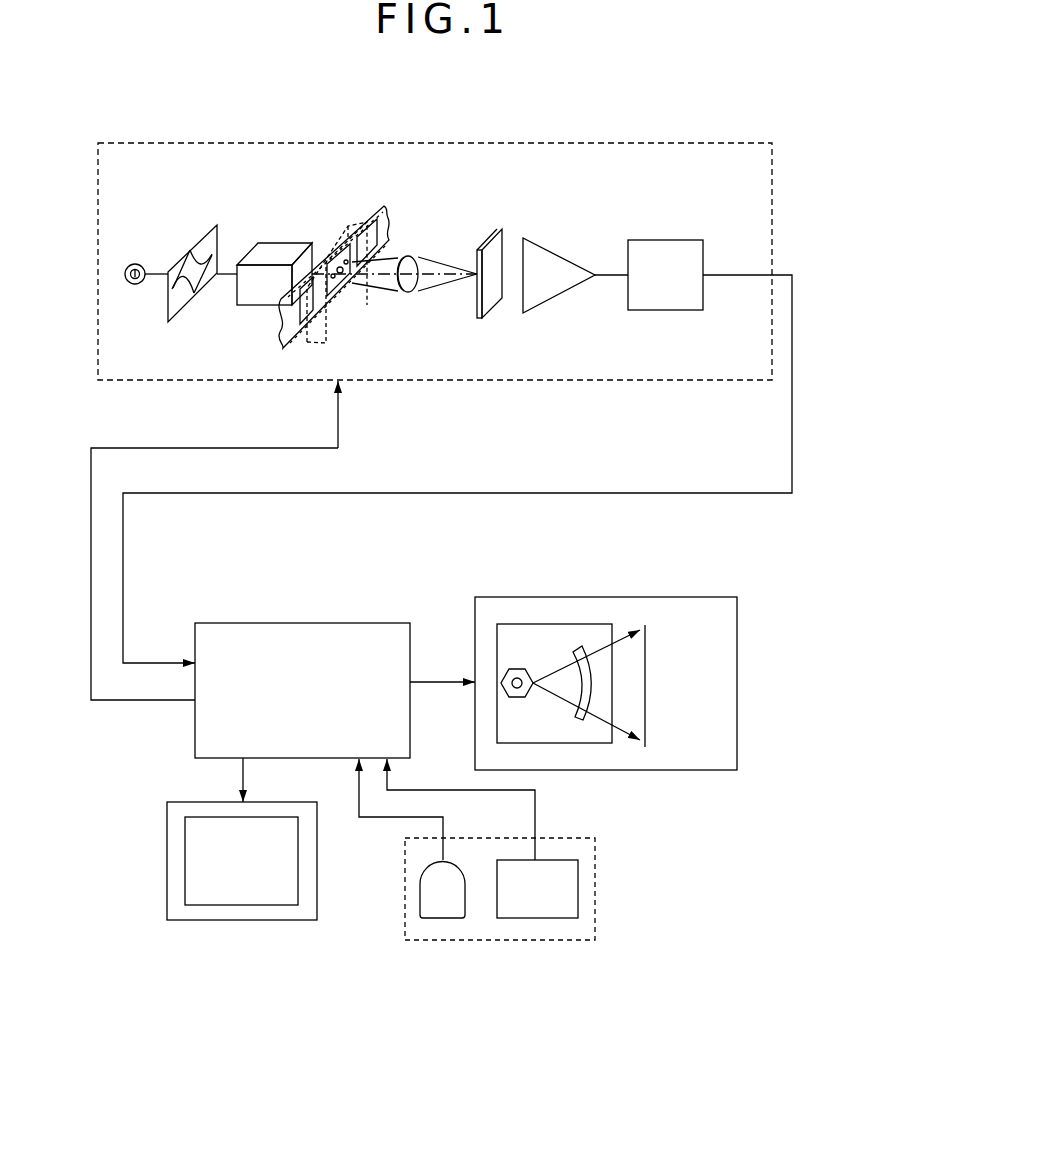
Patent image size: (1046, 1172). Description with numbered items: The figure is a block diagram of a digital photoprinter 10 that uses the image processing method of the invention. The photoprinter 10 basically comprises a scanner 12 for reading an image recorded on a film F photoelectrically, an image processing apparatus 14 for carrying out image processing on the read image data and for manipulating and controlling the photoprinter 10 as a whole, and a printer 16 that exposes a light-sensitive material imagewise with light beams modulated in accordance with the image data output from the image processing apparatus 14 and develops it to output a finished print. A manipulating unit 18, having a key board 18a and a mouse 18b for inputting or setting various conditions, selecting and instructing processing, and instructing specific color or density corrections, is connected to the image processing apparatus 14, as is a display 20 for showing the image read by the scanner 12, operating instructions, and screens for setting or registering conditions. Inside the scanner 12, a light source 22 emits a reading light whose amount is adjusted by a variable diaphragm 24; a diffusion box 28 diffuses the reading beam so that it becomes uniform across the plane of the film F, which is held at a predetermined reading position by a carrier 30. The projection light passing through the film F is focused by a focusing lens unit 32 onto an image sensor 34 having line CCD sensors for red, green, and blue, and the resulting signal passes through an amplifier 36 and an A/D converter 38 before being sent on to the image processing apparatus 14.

The digital photoprinter 10 is at (663, 117).
The scanner 12 is at (283, 141).
The image processing apparatus 14 is at (299, 623).
The printer 16 is at (603, 597).
The manipulating unit 18 is at (480, 941).
The key board 18a is at (540, 920).
The mouse 18b is at (440, 920).
The display 20 is at (232, 921).
The light source 22 is at (135, 263).
The variable diaphragm 24 is at (199, 241).
The diffusion box 28 is at (273, 261).
The carrier 30 is at (366, 307).
The focusing lens unit 32 is at (408, 256).
The image sensor 34 is at (492, 253).
The amplifier 36 is at (559, 298).
The A/D converter 38 is at (687, 240).
The film F is at (380, 208).